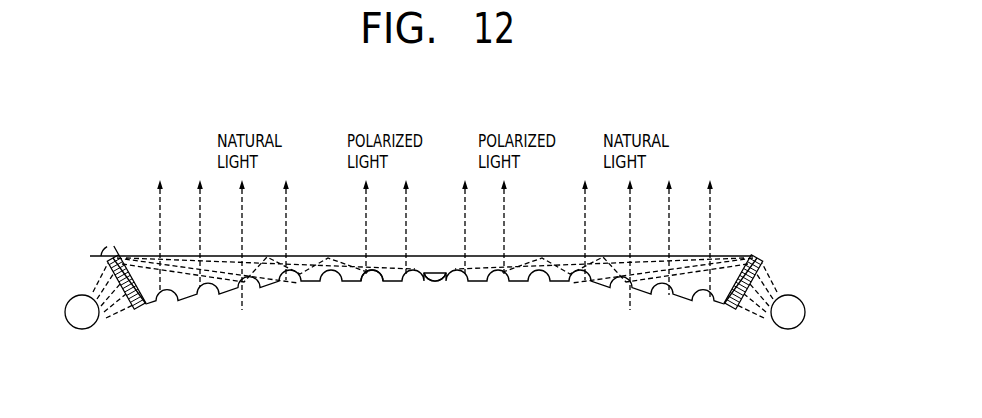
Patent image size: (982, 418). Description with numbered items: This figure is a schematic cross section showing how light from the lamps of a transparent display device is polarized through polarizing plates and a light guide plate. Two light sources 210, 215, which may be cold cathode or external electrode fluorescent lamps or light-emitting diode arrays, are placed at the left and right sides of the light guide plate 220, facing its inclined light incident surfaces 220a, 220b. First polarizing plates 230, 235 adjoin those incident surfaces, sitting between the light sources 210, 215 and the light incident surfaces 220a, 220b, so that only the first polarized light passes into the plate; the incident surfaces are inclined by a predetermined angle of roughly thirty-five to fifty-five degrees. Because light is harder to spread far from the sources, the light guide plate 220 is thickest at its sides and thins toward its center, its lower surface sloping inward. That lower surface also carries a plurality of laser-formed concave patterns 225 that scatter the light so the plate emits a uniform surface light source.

The light source 210 is at (82, 322).
The light source 215 is at (790, 320).
The light guide plate 220 is at (274, 286).
The light incident surface 220a is at (146, 304).
The light incident surface 220b is at (724, 304).
The concave pattern 225 is at (372, 272).
The first polarizing plate 230 is at (138, 310).
The first polarizing plate 235 is at (732, 310).